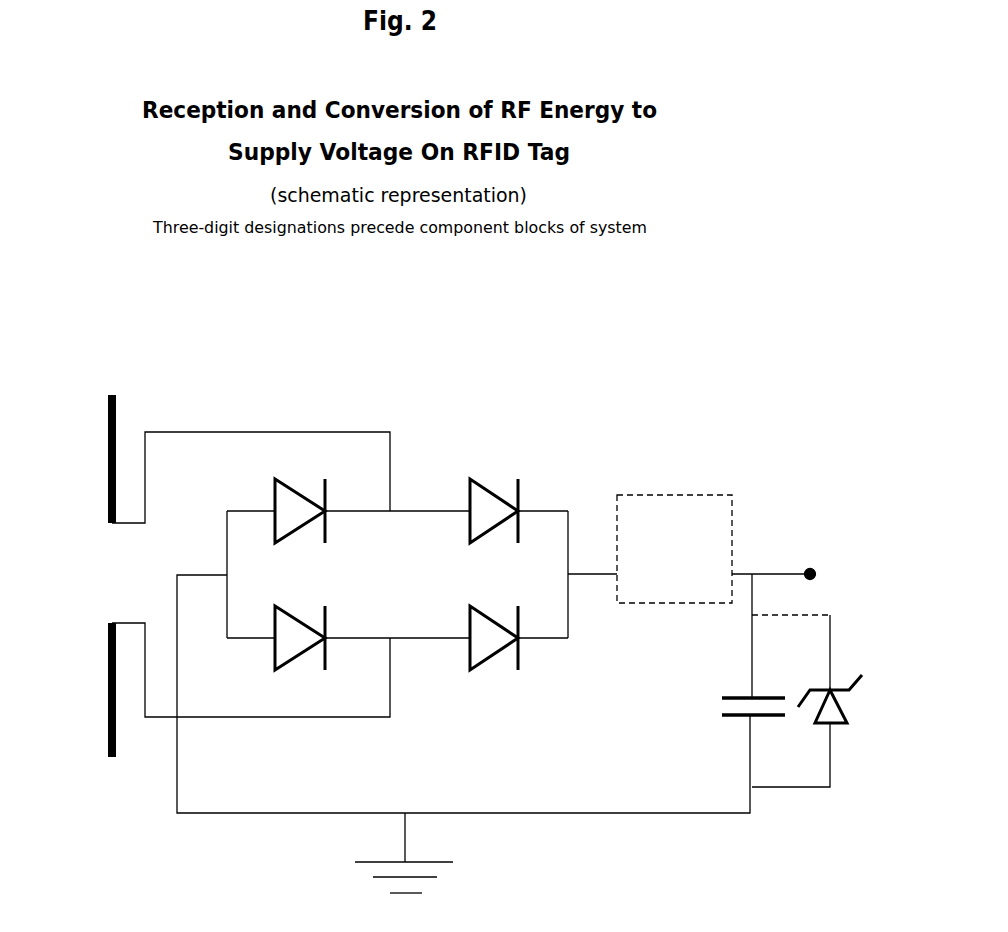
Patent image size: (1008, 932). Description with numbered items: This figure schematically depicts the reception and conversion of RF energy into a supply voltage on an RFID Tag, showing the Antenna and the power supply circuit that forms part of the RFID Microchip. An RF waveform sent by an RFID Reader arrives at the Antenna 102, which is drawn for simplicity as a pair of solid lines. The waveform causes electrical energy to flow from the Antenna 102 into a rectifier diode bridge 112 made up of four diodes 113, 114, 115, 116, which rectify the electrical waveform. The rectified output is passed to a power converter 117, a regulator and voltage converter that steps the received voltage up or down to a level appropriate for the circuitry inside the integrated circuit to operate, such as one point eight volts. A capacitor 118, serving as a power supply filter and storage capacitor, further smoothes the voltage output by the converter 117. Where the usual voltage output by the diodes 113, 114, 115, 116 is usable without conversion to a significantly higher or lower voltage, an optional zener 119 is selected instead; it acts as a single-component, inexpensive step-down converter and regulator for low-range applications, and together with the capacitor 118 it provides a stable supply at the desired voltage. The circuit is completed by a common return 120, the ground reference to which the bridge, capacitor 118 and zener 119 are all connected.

The Antenna 102 is at (92, 488).
The rectifier diode bridge 112 is at (463, 632).
The diode 113 is at (270, 498).
The diode 114 is at (466, 497).
The diode 115 is at (270, 651).
The diode 116 is at (467, 651).
The power converter 117 is at (716, 549).
The capacitor 118 is at (686, 664).
The zener 119 is at (807, 731).
The return (ground) 120 is at (450, 853).